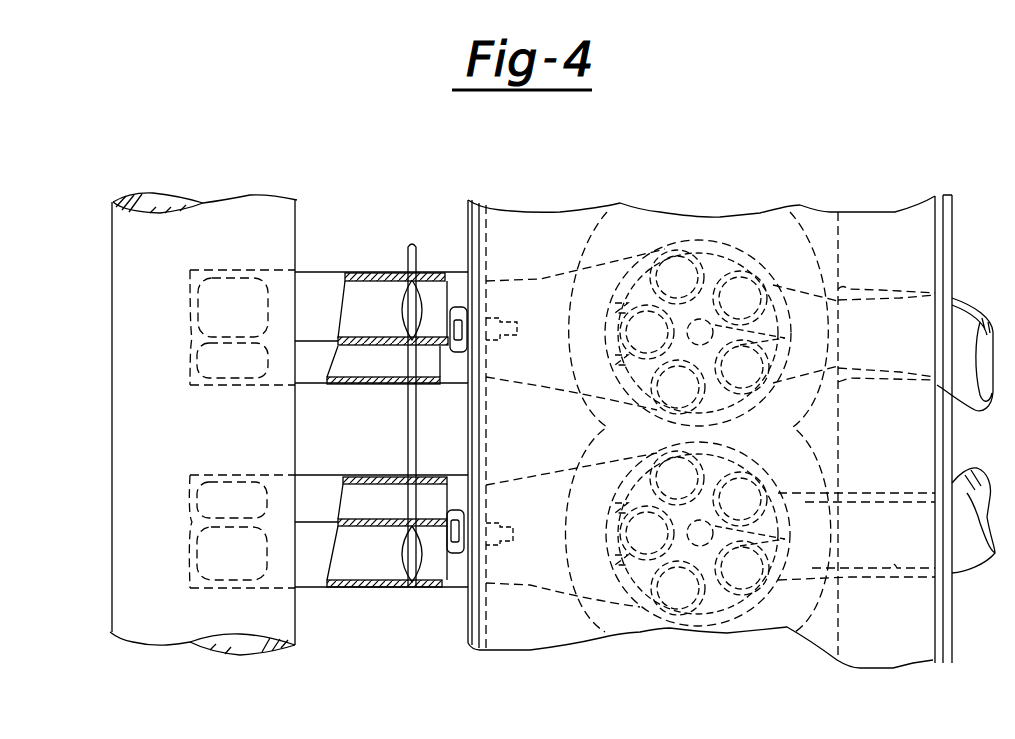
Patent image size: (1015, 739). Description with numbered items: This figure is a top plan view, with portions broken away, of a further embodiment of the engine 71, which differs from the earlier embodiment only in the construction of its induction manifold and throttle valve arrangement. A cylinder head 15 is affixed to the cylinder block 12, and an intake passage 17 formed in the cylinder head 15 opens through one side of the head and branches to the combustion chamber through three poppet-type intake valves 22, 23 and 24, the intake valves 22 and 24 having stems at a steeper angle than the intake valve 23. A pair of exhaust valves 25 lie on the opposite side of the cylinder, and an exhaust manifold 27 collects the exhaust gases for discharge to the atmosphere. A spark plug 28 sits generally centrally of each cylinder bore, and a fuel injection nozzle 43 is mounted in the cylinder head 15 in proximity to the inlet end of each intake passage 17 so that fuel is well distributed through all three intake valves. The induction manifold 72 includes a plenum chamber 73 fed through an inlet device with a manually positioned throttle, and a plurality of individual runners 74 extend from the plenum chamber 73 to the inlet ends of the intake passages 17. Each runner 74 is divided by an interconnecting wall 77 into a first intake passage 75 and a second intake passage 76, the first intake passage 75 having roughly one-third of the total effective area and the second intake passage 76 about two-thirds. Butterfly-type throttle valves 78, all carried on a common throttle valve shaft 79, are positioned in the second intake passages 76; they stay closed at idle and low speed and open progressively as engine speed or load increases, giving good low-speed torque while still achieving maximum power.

The cylinder block 12 is at (793, 237).
The cylinder head 15 is at (840, 233).
The intake passage 17 is at (543, 277).
The intake valve 22 is at (657, 407).
The intake valve 23 is at (623, 340).
The intake valve 24 is at (673, 260).
The exhaust valve 25 is at (752, 245).
The exhaust manifold 27 is at (908, 290).
The spark plug 28 is at (740, 398).
The fuel injection nozzle 43 is at (455, 307).
The engine 71 is at (673, 176).
The induction manifold 72 is at (102, 329).
The plenum chamber 73 is at (110, 258).
The runner 74 is at (346, 273).
The first intake passage 75 is at (390, 373).
The second intake passage 76 is at (388, 319).
The interconnecting wall 77 is at (338, 342).
The throttle valve 78 is at (402, 285).
The throttle valve shaft 79 is at (413, 243).